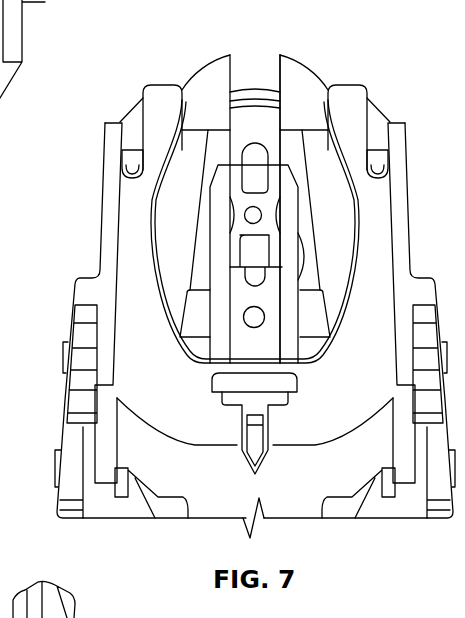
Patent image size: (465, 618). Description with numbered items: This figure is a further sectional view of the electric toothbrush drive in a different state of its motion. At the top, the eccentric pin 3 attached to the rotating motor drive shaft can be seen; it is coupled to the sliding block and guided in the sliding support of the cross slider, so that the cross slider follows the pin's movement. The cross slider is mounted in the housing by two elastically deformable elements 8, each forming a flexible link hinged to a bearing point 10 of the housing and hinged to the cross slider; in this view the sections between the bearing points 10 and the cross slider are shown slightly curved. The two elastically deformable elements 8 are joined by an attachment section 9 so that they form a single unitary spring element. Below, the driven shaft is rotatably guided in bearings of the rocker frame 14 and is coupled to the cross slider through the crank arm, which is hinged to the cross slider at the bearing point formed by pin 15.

The pin 3 is at (253, 207).
The elastically deformable elements 8 is at (152, 217).
The attachment section 9 is at (207, 368).
The bearing point 10 is at (163, 98).
The rocker frame 14 is at (270, 385).
The pin 15 is at (247, 312).